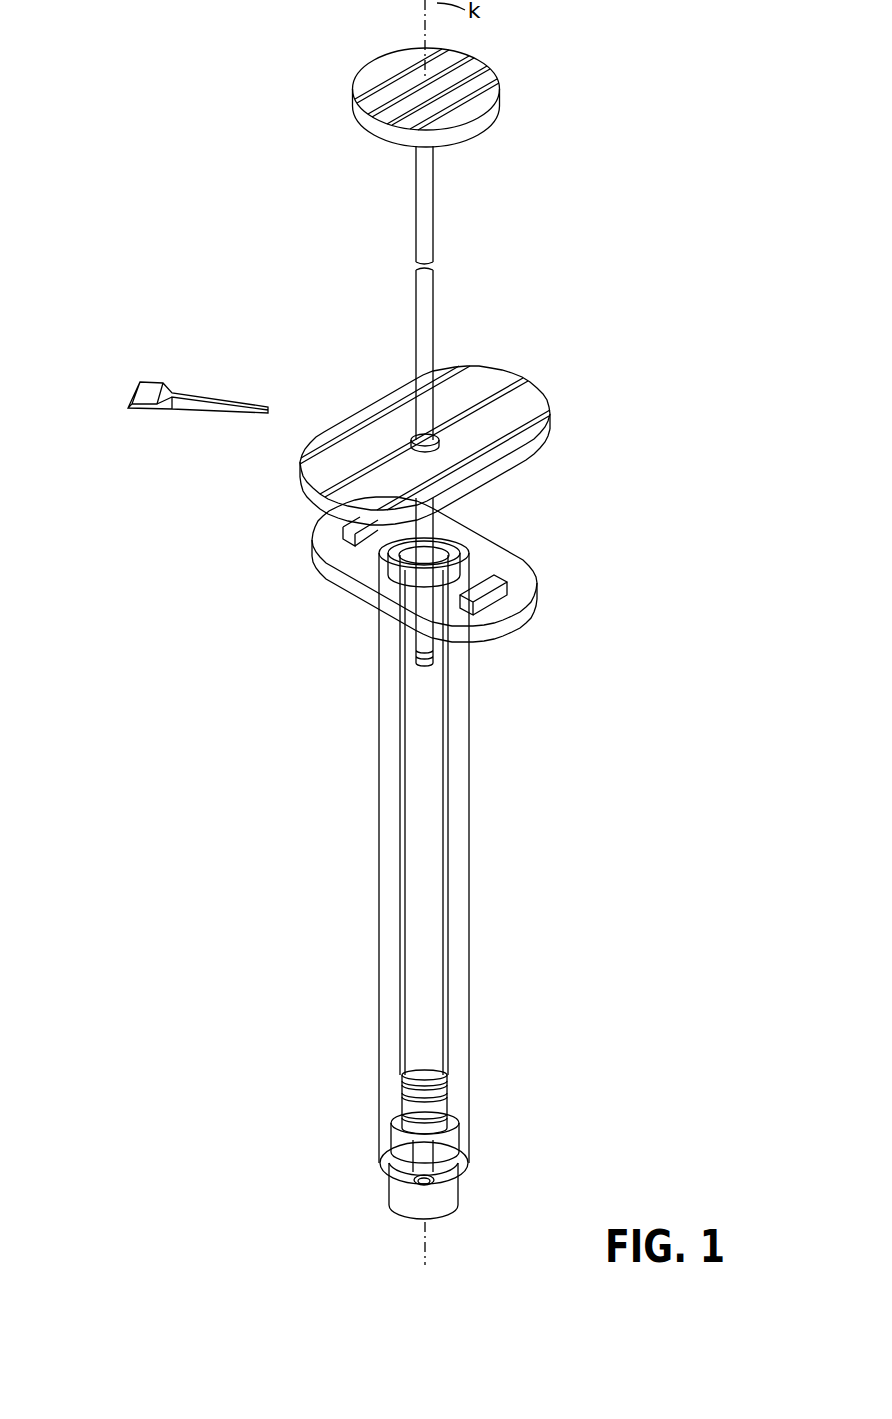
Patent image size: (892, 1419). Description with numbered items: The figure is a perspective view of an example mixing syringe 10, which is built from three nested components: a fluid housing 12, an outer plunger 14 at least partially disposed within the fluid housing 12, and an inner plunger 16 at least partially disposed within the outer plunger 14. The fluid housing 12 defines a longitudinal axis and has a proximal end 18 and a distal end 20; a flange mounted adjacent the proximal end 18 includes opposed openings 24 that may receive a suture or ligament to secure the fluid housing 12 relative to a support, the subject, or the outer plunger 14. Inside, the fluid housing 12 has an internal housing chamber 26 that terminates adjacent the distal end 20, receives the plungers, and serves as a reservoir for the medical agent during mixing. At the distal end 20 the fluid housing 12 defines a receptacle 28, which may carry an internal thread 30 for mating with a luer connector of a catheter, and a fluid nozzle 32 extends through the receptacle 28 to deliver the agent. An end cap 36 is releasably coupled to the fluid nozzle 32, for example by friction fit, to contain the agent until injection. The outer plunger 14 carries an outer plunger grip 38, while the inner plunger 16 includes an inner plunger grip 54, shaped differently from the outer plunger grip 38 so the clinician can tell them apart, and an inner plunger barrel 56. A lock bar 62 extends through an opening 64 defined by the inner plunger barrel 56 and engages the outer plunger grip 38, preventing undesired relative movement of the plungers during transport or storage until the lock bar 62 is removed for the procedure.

The mixing syringe 10 is at (306, 736).
The fluid housing 12 is at (470, 873).
The outer plunger 14 is at (426, 925).
The inner plunger 16 is at (452, 284).
The proximal end 18 is at (470, 681).
The distal end 20 is at (468, 1150).
The opposed openings 24 is at (313, 531).
The internal housing chamber 26 is at (448, 982).
The receptacle 28 is at (446, 1160).
The internal thread 30 is at (404, 1172).
The fluid nozzle 32 is at (404, 1182).
The end cap 36 is at (443, 1207).
The outer plunger grip 38 is at (530, 393).
The inner plunger grip 54 is at (380, 80).
The inner plunger barrel 56 is at (420, 398).
The lock bar 62 is at (150, 396).
The opening 64 is at (434, 436).